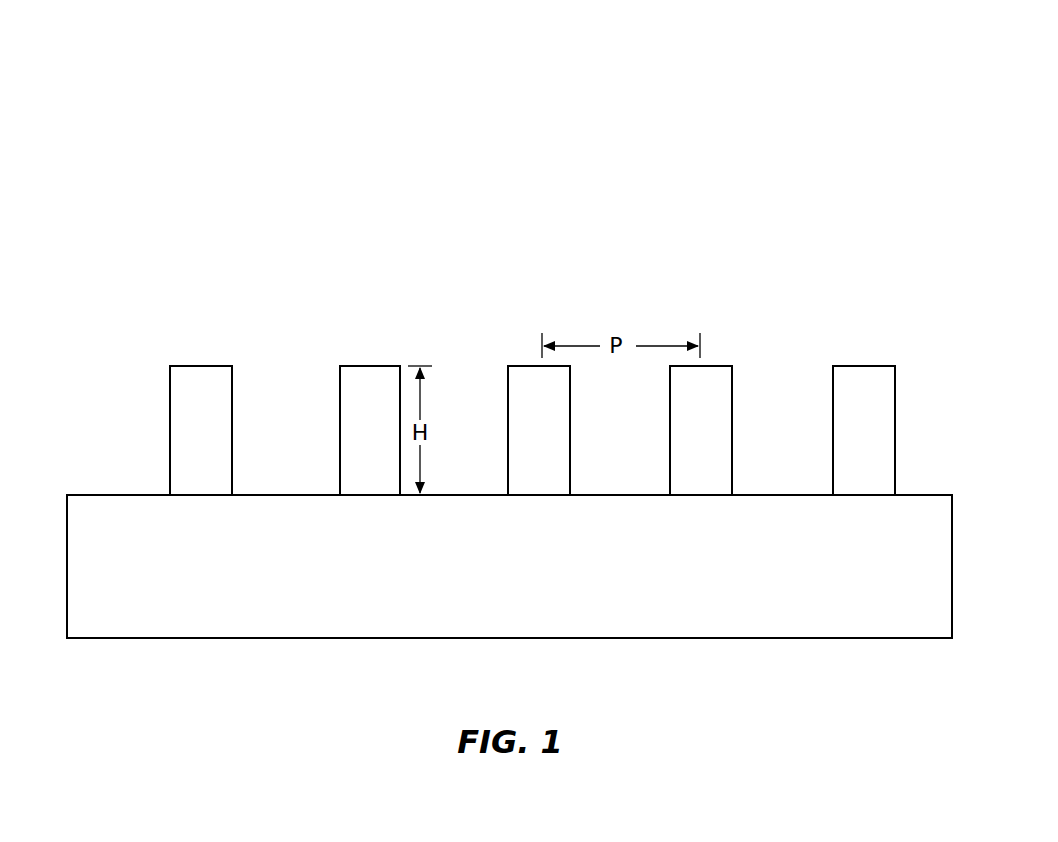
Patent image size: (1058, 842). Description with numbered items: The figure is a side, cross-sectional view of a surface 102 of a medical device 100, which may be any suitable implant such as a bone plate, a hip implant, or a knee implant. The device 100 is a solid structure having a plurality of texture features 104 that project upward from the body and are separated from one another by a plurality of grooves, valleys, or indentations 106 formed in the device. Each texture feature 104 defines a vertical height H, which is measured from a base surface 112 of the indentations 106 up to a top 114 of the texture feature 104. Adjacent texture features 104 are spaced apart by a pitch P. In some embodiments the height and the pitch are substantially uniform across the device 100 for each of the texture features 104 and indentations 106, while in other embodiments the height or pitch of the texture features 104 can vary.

The medical device 100 is at (287, 181).
The surface 102 is at (99, 484).
The texture features 104 is at (176, 378).
The indentations 106 is at (469, 411).
The base surface 112 is at (265, 494).
The top 114 is at (375, 365).